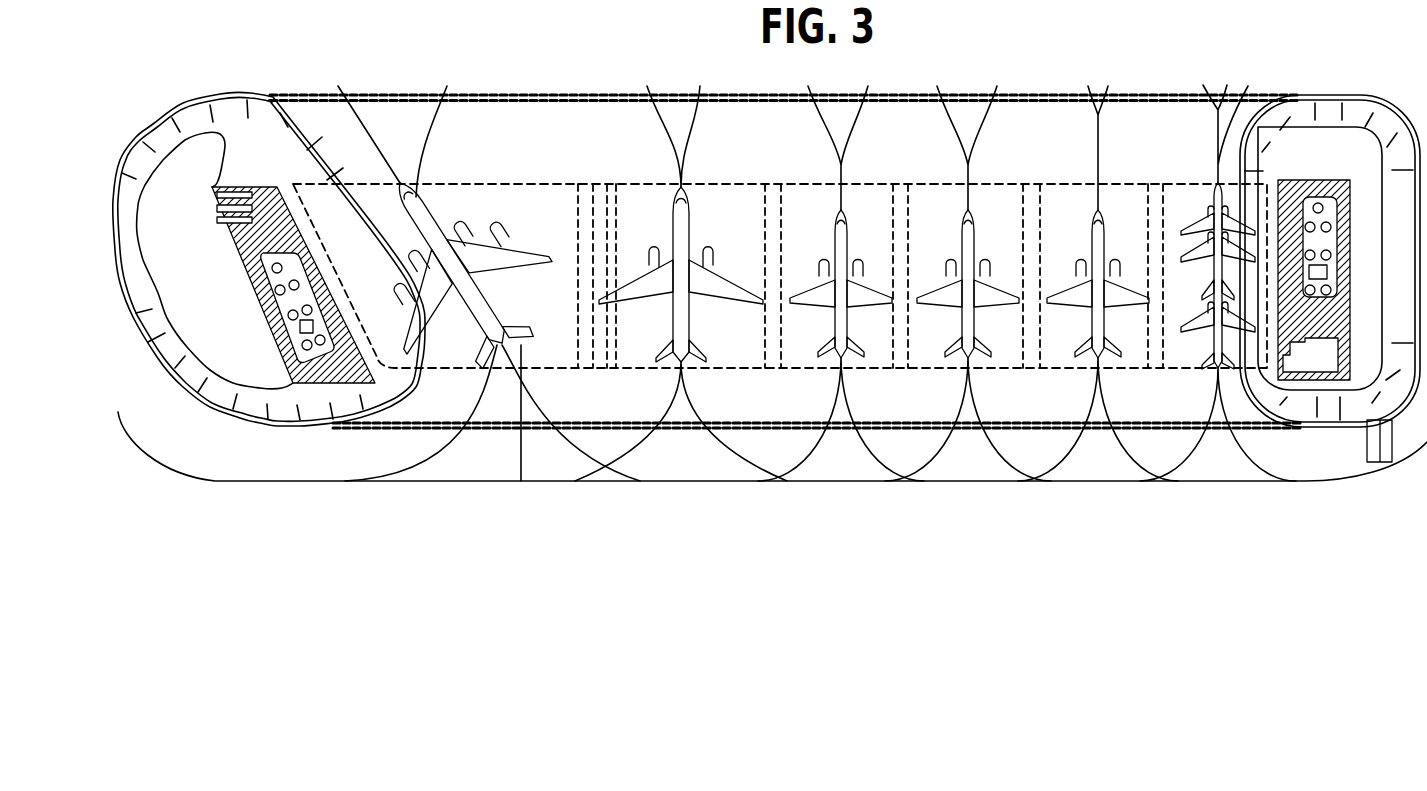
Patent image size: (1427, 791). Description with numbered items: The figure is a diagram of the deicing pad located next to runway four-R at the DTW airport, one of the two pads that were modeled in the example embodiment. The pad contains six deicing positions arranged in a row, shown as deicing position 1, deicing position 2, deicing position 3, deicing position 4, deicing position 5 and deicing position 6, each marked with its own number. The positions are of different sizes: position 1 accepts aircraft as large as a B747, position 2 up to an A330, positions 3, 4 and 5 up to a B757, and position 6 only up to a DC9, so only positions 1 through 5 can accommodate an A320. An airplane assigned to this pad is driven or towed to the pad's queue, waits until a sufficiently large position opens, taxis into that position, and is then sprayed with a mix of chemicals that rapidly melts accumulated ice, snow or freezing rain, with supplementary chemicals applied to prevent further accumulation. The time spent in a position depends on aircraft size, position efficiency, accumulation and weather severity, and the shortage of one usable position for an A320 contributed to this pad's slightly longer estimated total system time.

The deicing position 1 is at (483, 283).
The deicing position 2 is at (681, 283).
The deicing position 3 is at (841, 283).
The deicing position 4 is at (968, 283).
The deicing position 5 is at (1098, 283).
The deicing position 6 is at (1218, 283).